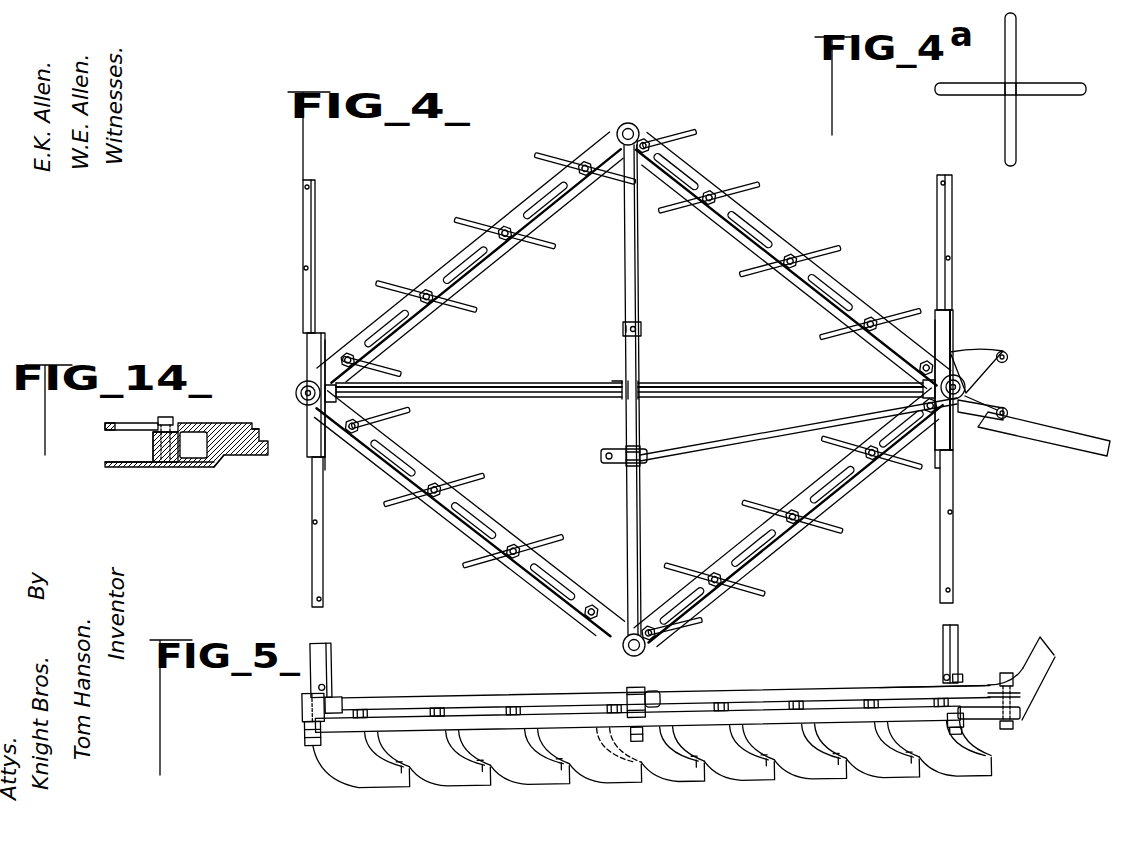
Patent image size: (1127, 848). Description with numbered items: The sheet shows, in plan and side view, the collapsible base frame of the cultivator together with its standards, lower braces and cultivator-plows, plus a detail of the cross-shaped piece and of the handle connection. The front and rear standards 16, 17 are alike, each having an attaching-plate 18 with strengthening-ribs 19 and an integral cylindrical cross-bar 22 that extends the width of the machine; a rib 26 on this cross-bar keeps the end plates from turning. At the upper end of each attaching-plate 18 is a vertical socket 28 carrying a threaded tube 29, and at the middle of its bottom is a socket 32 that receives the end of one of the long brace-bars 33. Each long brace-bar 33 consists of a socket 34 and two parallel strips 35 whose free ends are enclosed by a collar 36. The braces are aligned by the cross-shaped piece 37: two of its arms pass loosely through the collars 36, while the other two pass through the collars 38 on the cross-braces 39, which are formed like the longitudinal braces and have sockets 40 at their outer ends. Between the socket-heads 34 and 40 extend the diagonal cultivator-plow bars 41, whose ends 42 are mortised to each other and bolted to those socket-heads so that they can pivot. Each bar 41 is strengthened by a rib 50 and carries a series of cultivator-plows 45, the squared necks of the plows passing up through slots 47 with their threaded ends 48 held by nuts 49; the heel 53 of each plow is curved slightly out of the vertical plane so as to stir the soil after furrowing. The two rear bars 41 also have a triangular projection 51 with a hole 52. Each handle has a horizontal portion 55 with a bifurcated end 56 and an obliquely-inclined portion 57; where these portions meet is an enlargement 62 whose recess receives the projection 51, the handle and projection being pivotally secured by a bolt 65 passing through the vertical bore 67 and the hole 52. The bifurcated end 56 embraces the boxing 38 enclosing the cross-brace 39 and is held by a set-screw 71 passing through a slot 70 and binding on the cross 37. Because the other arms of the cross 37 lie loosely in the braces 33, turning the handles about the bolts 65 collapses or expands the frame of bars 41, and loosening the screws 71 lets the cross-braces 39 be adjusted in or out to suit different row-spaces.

In FIG. 4, the front standard 16 is at (307, 336).
In FIG. 5, the front standard 16 is at (335, 670).
In FIG. 4, the rear standard 17 is at (954, 318).
In FIG. 5, the rear standard 17 is at (943, 648).
In FIG. 4, the attaching-plate 18 is at (326, 460).
In FIG. 4, the strengthening-ribs 19 is at (312, 432).
In FIG. 4, the cylindrical cross-bar 22 is at (323, 540).
In FIG. 5, the cylindrical cross-bar 22 is at (318, 686).
In FIG. 4, the rib 26 is at (315, 240).
In FIG. 4, the vertical socket 28 is at (296, 390).
In FIG. 4, the threaded tube 29 is at (298, 396).
In FIG. 4, the socket 32 is at (340, 400).
In FIG. 5, the socket 32 is at (342, 700).
In FIG. 4, the long brace-bar 33 is at (629, 392).
In FIG. 5, the long brace-bar 33 is at (665, 685).
In FIG. 5, the socket 34 is at (300, 712).
In FIG. 4, the parallel strips 35 is at (490, 382).
In FIG. 4, the collar 36 is at (642, 384).
In FIG. 4a, the cross-shaped piece 37 is at (1010, 89).
In FIG. 14, the cross-shaped piece 37 is at (170, 472).
In FIG. 4, the cross-shaped piece 37 is at (625, 365).
In FIG. 14, the collar 38 is at (152, 450).
In FIG. 4, the collar 38 is at (642, 332).
In FIG. 14, the cross-brace 39 is at (182, 427).
In FIG. 4, the cross-brace 39 is at (633, 270).
In FIG. 4, the socket 40 is at (640, 126).
In FIG. 5, the socket 40 is at (632, 694).
In FIG. 4, the cultivator-plow bar 41 is at (462, 250).
In FIG. 5, the cultivator-plow bar 41 is at (528, 728).
In FIG. 5, the ends of cultivator-plow bars 42 is at (304, 730).
In FIG. 4, the cultivator-plow 45 is at (736, 186).
In FIG. 5, the cultivator-plow 45 is at (652, 755).
In FIG. 4, the slot 47 is at (482, 262).
In FIG. 4, the threaded end 48 is at (560, 170).
In FIG. 4, the nut 49 is at (588, 180).
In FIG. 5, the nut 49 is at (436, 710).
In FIG. 4, the rib 50 is at (526, 218).
In FIG. 4, the triangular projection 51 is at (1012, 432).
In FIG. 5, the triangular projection 51 is at (1020, 716).
In FIG. 4, the hole 52 is at (1010, 357).
In FIG. 5, the heel 53 is at (556, 783).
In FIG. 14, the horizontal portion 55 is at (248, 450).
In FIG. 4, the horizontal portion 55 is at (740, 449).
In FIG. 5, the horizontal portion 55 is at (892, 697).
In FIG. 14, the bifurcated end 56 is at (218, 466).
In FIG. 4, the bifurcated end 56 is at (604, 458).
In FIG. 5, the bifurcated end 56 is at (660, 700).
In FIG. 4, the obliquely-inclined portion 57 is at (1062, 442).
In FIG. 5, the obliquely-inclined portion 57 is at (1048, 676).
In FIG. 5, the enlargement 62 is at (1030, 700).
In FIG. 5, the bolt 65 is at (1008, 673).
In FIG. 4, the vertical bore 67 is at (1010, 414).
In FIG. 14, the slot 70 is at (139, 423).
In FIG. 4, the slot 70 is at (616, 464).
In FIG. 14, the set-screw 71 is at (166, 417).
In FIG. 4, the set-screw 71 is at (642, 450).